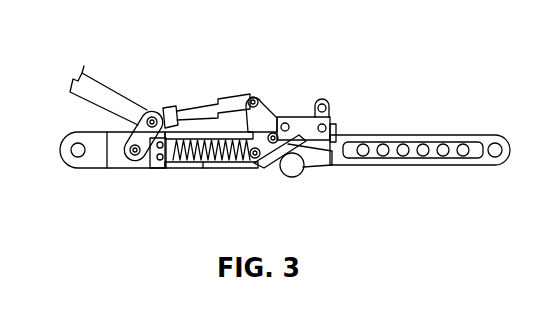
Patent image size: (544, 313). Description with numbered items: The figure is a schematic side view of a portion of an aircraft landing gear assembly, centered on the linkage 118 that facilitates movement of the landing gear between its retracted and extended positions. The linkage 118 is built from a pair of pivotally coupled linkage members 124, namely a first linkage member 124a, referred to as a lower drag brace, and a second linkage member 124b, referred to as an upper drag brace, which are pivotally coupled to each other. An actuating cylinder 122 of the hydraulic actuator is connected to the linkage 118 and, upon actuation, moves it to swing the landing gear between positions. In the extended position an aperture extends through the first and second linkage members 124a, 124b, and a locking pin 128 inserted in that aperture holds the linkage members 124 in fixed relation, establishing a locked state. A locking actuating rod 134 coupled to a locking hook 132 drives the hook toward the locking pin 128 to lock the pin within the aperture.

The linkage 118 is at (257, 172).
The actuating cylinder 122 is at (93, 86).
The pivotally coupled linkage members 124 is at (82, 133).
The first linkage member 124a is at (447, 167).
The second linkage member 124b is at (175, 170).
The locking pin 128 is at (303, 132).
The locking hook 132 is at (335, 130).
The locking actuating rod 134 is at (217, 108).